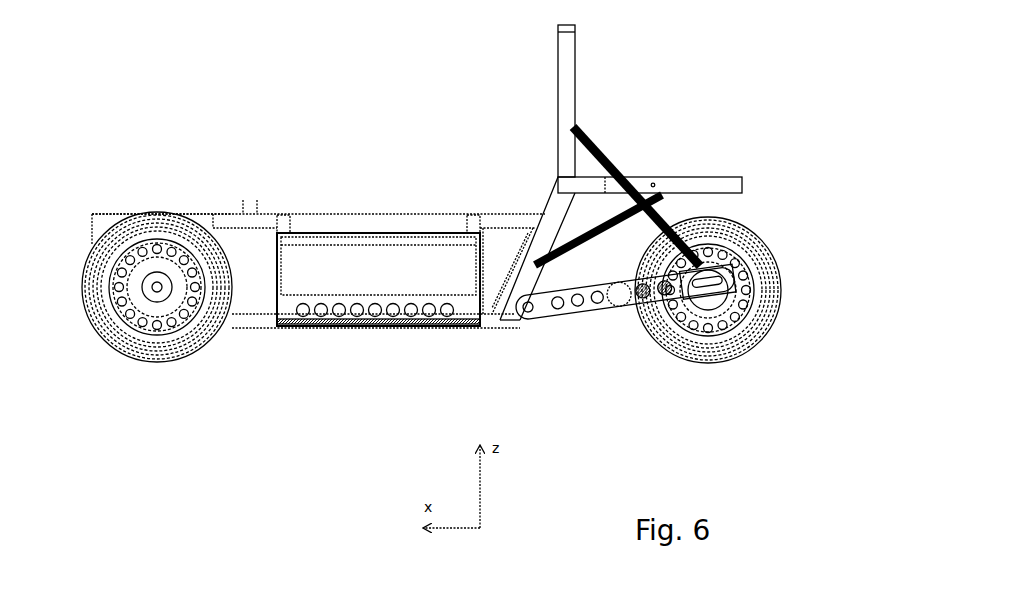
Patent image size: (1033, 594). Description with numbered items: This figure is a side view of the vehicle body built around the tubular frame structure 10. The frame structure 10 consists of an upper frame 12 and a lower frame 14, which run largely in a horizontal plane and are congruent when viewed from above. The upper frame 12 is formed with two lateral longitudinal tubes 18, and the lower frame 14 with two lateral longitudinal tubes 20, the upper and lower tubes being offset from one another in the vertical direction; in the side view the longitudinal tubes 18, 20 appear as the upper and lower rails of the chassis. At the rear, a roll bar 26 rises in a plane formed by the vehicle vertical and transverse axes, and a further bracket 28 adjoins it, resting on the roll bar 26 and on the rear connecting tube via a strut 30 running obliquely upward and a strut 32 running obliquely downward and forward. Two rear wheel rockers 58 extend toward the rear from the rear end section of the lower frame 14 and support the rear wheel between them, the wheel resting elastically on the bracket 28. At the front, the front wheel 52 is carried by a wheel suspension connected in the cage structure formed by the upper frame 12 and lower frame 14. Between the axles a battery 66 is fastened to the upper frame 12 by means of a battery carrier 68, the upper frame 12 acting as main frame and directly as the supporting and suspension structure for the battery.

The tubular frame structure 10 is at (346, 152).
The upper frame 12 is at (81, 216).
The lower frame 14 is at (126, 313).
The lateral longitudinal tubes 18 is at (267, 205).
The lateral longitudinal tubes 20 is at (258, 340).
The roll bar 26 is at (563, 59).
The bracket 28 is at (723, 181).
The strut 30 is at (621, 152).
The strut 32 is at (605, 225).
The front wheel 52 is at (177, 345).
The rear wheel rocker 58 is at (585, 312).
The battery 66 is at (328, 283).
The battery carrier 68 is at (470, 305).